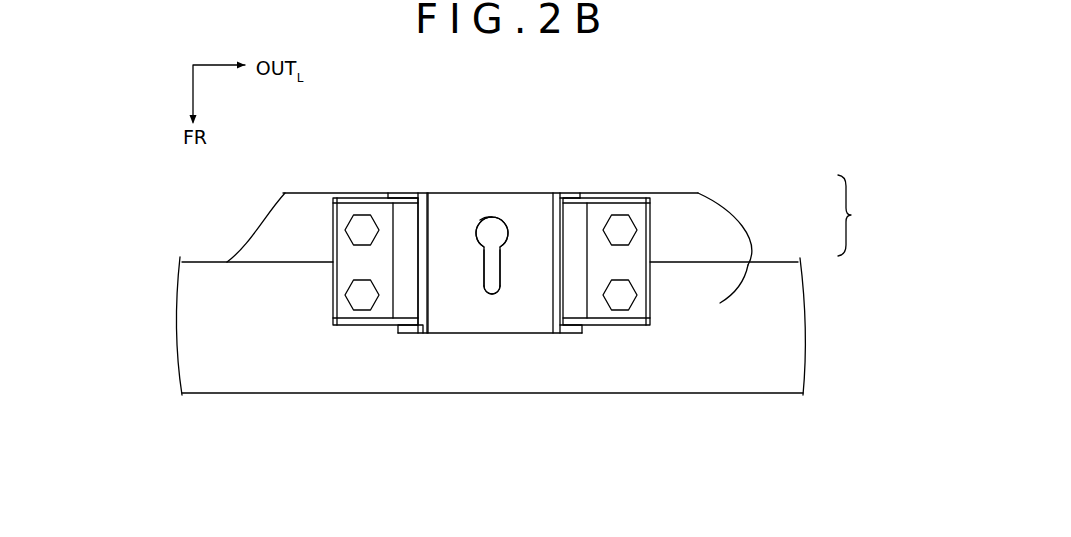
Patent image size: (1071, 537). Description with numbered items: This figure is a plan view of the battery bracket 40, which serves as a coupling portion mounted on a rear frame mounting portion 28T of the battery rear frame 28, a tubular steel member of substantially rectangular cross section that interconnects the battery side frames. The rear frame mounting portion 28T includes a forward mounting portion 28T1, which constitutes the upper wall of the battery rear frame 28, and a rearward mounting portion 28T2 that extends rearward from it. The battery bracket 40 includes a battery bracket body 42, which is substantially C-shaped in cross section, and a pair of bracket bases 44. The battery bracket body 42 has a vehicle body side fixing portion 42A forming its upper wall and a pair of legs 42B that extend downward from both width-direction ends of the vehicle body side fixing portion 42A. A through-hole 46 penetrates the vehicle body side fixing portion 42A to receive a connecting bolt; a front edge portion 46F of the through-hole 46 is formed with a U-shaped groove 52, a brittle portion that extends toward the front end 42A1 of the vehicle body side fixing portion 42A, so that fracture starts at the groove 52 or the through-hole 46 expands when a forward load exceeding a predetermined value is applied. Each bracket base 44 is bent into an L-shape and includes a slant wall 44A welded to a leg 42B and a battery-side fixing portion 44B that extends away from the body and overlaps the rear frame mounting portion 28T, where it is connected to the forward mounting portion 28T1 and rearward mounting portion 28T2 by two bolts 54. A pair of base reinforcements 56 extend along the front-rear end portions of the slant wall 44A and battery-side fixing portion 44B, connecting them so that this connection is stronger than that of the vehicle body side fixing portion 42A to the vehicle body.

The battery rear frame 28 is at (737, 396).
The rear frame mounting portion 28T is at (868, 215).
The forward mounting portion 28T1 is at (746, 266).
The rearward mounting portion 28T2 is at (710, 226).
The battery bracket 40 is at (512, 146).
The battery bracket body 42 is at (543, 340).
The vehicle body side fixing portion 42A is at (493, 210).
The front end of the vehicle body side fixing portion 42A1 is at (510, 334).
The leg 42B is at (421, 334).
The bracket base 44 is at (328, 250).
The slant wall 44A is at (407, 215).
The battery-side fixing portion 44B is at (333, 217).
The through-hole 46 is at (499, 204).
The front edge portion 46F is at (488, 207).
The groove 52 is at (503, 288).
The bolt 54 is at (361, 228).
The base reinforcement 56 is at (377, 198).